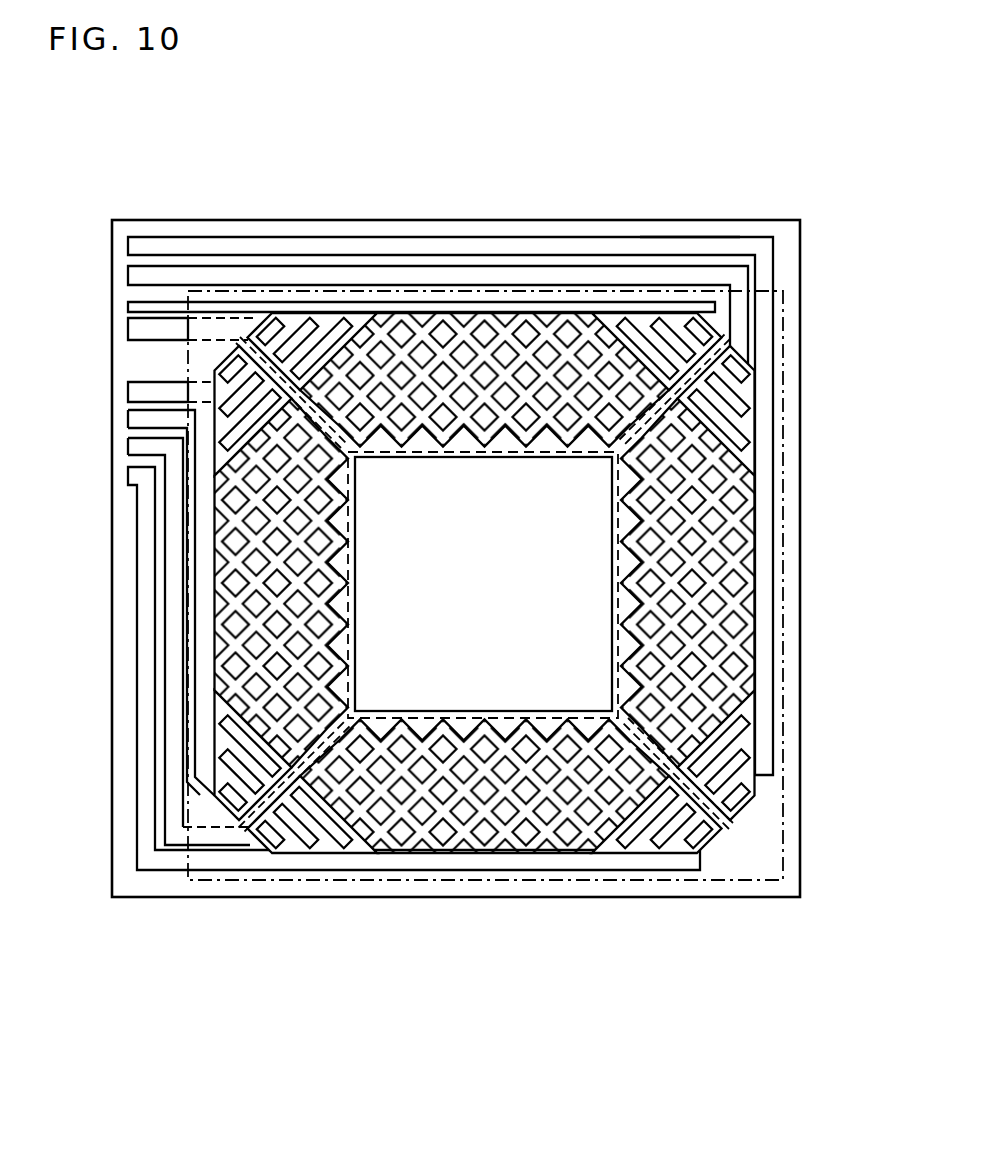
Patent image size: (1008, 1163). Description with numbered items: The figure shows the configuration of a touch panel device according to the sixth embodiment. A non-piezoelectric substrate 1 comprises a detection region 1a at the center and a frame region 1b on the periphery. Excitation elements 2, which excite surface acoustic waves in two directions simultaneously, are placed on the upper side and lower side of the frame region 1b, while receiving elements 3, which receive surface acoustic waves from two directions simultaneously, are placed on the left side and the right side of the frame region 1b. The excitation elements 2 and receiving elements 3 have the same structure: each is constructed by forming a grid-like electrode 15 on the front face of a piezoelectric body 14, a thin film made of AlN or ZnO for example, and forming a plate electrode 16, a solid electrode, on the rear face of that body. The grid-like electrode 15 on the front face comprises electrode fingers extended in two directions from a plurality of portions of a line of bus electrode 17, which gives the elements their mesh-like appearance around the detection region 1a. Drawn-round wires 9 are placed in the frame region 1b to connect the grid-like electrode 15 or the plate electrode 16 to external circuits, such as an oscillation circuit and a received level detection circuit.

The non-piezoelectric substrate 1 is at (748, 222).
The detection region 1a is at (505, 458).
The frame region 1b is at (688, 232).
The excitation element 2 is at (477, 306).
The receiving element 3 is at (464, 566).
The drawn-round wire 9 is at (172, 240).
The piezoelectric body 14 is at (264, 290).
The grid-like electrode 15 is at (576, 306).
The plate electrode 16 is at (346, 316).
The bus electrode 17 is at (418, 310).